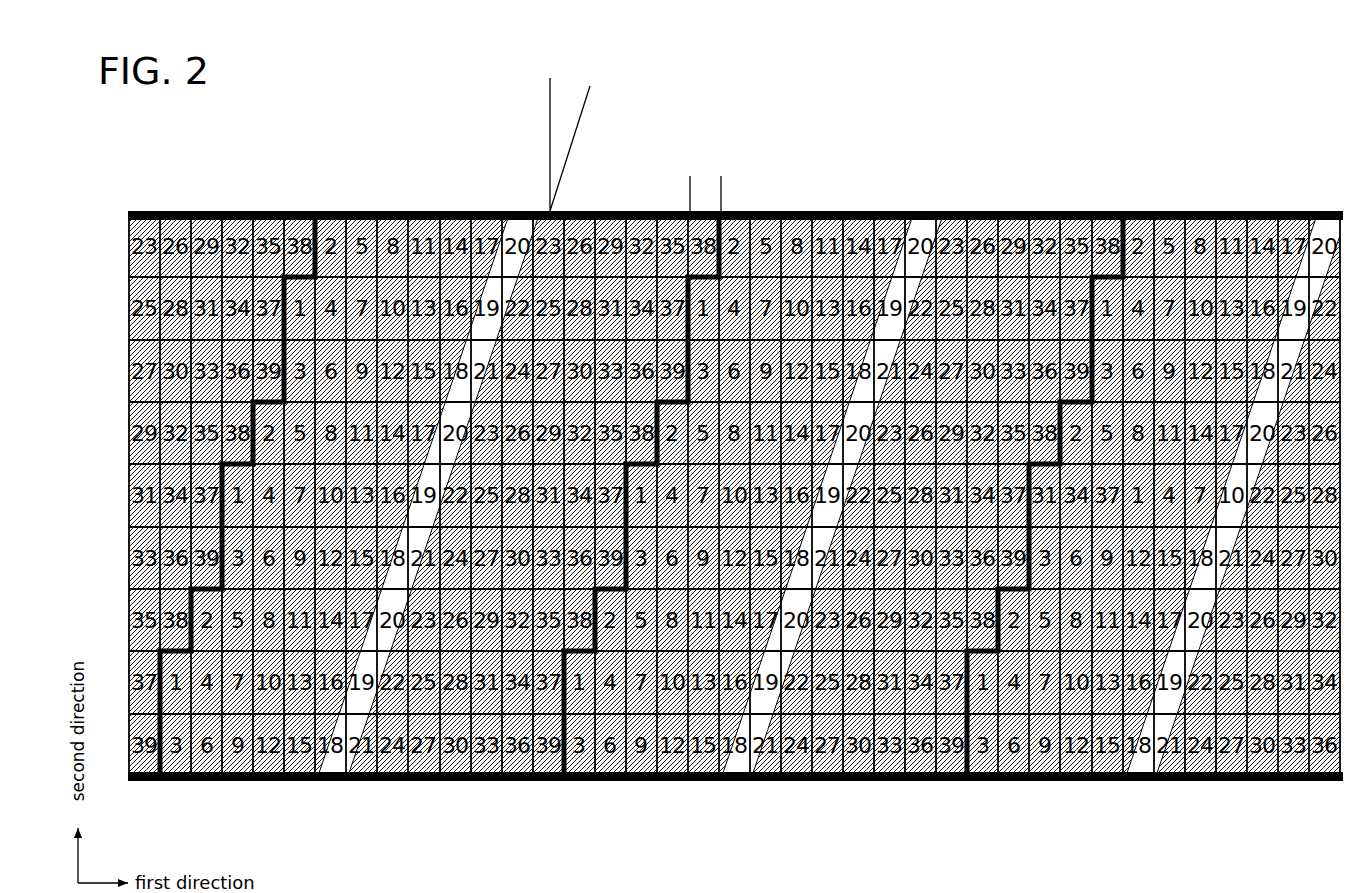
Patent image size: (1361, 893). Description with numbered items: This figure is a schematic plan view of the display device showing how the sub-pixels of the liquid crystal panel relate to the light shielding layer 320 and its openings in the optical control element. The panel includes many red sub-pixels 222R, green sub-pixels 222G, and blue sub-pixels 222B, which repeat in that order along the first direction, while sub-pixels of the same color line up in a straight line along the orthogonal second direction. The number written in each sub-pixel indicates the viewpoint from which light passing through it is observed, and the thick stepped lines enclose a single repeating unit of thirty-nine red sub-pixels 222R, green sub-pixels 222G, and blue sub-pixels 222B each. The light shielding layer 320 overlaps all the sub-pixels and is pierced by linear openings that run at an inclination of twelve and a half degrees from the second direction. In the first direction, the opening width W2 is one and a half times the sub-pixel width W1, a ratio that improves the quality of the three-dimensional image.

The red sub-pixel 222R is at (514, 203).
The green sub-pixel 222G is at (916, 203).
The blue sub-pixel 222B is at (1322, 203).
The light shielding layer 320 is at (478, 774).
The width of the sub-pixel W1 is at (752, 188).
The width of the opening portion W2 is at (398, 700).